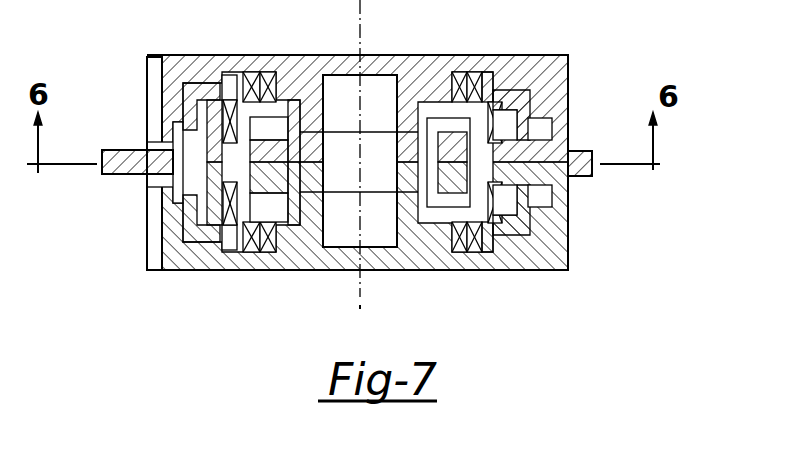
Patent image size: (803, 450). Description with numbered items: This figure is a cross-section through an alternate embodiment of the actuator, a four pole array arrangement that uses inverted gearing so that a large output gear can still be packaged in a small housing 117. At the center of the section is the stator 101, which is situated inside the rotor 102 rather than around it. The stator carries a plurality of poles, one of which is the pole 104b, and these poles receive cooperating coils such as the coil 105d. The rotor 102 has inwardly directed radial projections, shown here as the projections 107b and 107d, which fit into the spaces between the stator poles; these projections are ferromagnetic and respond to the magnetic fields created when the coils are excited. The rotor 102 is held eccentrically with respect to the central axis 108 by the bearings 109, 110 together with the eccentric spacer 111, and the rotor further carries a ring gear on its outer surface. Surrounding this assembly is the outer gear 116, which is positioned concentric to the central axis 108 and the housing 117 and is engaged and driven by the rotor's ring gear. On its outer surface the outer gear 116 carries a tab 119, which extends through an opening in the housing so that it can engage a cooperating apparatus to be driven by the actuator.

The stator 101 is at (400, 183).
The rotor 102 is at (555, 123).
The pole 104b is at (467, 170).
The coil 105d is at (287, 203).
The radial projection 107b is at (458, 150).
The radial projection 107d is at (300, 210).
The central axis 108 is at (360, 42).
The bearing 109 is at (275, 55).
The bearing 110 is at (255, 55).
The eccentric spacer 111 is at (248, 257).
The outer gear 116 is at (148, 142).
The housing 117 is at (193, 32).
The tab 119 is at (113, 176).